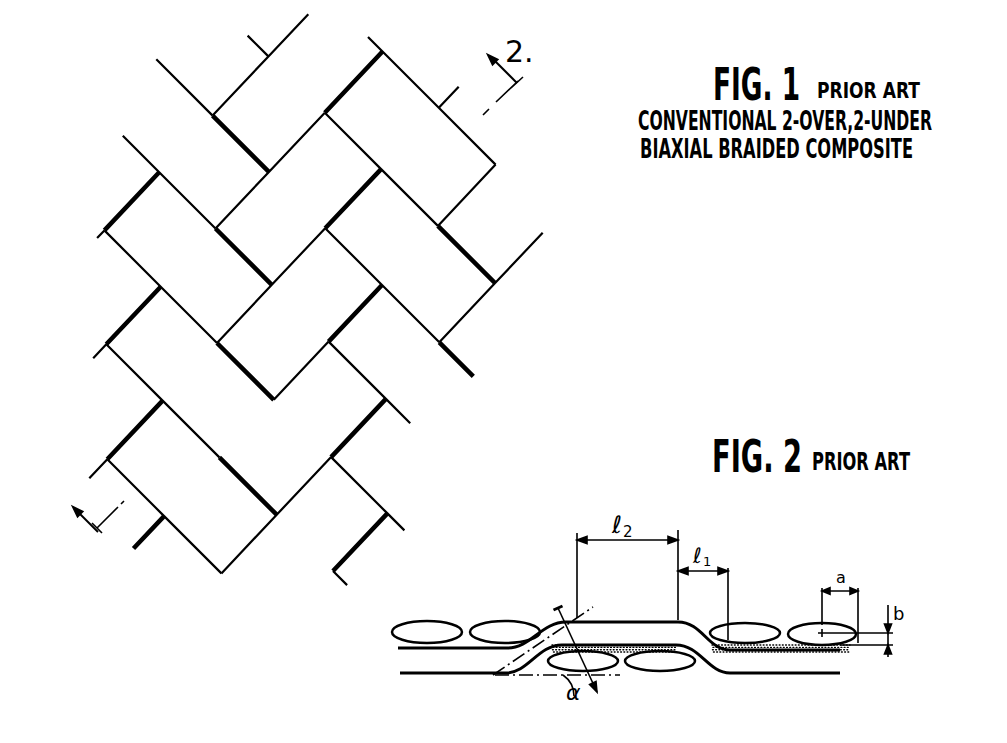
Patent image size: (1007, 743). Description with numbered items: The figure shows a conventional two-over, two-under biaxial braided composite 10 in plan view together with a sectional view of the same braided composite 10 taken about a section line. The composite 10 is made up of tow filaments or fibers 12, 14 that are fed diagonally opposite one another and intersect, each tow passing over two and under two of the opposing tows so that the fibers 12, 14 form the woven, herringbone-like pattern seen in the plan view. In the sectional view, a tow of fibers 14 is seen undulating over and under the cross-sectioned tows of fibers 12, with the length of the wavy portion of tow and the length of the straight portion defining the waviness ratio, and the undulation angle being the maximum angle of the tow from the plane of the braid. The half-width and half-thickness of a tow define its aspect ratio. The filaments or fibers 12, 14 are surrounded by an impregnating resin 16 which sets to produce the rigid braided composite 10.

In FIG. 1, the biaxial braided composite 10 is at (552, 282).
In FIG. 2, the biaxial braided composite 10 is at (529, 606).
In FIG. 1, the tow filaments or fibers 12 is at (447, 308).
In FIG. 2, the tow filaments or fibers 12 is at (803, 623).
In FIG. 1, the tow filaments or fibers 14 is at (492, 145).
In FIG. 2, the tow filaments or fibers 14 is at (760, 674).
In FIG. 2, the impregnating resin 16 is at (783, 644).